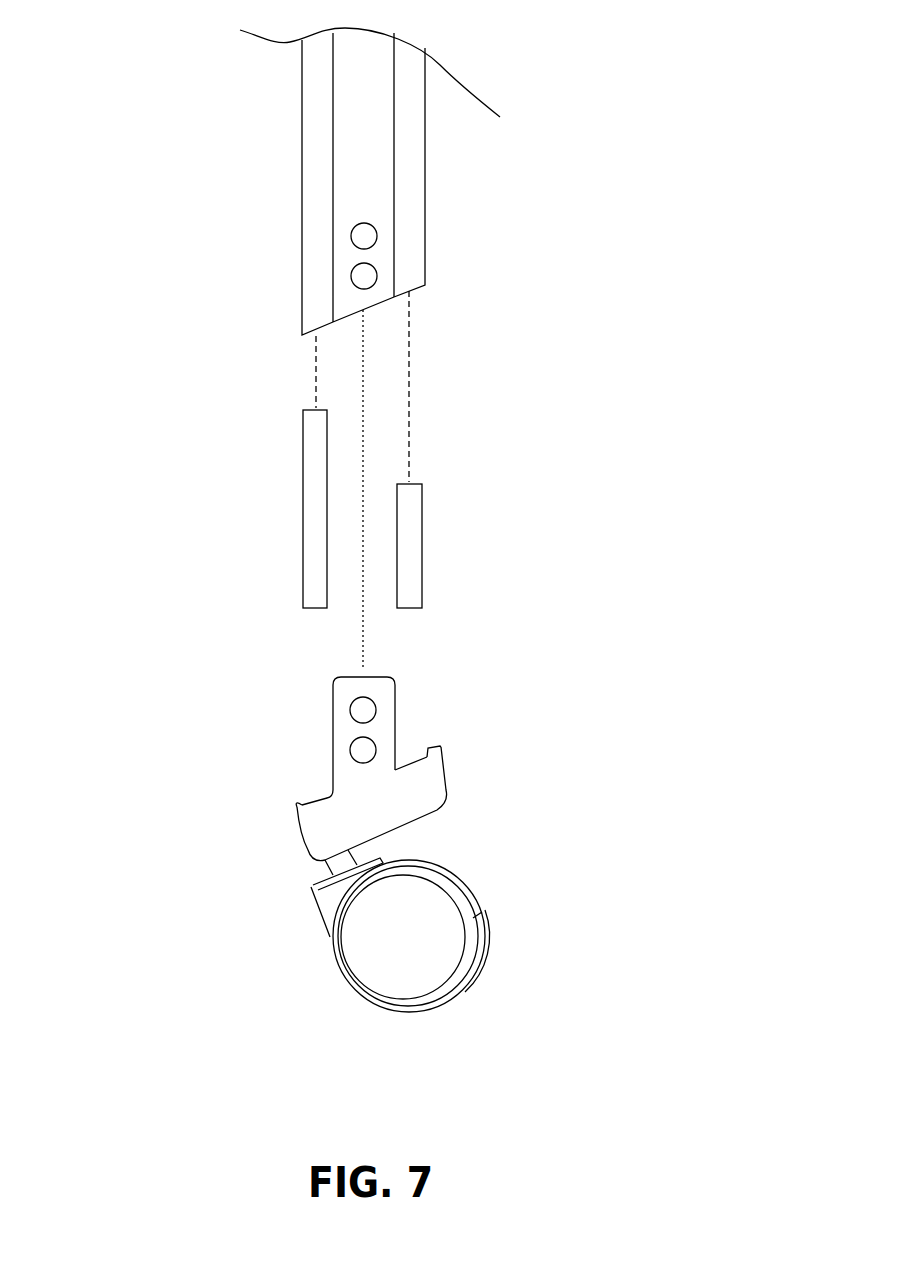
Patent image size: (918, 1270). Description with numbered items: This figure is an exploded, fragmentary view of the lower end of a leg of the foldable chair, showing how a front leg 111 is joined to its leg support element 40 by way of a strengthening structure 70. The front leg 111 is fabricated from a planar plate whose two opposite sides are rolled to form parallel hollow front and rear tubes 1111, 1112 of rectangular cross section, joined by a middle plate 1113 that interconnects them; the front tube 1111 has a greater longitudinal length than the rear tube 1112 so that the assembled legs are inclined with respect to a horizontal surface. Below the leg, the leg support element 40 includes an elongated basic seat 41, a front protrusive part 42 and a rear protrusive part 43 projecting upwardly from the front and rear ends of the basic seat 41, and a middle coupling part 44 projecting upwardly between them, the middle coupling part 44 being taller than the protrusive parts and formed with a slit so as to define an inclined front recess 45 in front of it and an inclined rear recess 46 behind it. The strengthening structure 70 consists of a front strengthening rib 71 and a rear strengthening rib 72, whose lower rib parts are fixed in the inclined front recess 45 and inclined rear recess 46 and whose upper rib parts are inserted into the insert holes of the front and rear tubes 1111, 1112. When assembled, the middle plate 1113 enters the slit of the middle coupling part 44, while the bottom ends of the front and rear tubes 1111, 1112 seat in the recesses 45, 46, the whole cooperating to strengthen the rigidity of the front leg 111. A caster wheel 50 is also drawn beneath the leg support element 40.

The front leg 111 is at (459, 181).
The front tube 1111 is at (315, 183).
The rear tube 1112 is at (410, 158).
The middle plate 1113 is at (358, 103).
The strengthening structure 70 is at (297, 479).
The front strengthening rib 71 is at (310, 539).
The rear strengthening rib 72 is at (412, 538).
The leg support element 40 is at (437, 754).
The basic seat 41 is at (402, 782).
The front protrusive part 42 is at (300, 803).
The rear protrusive part 43 is at (440, 747).
The middle coupling part 44 is at (342, 717).
The inclined front recess 45 is at (317, 797).
The inclined rear recess 46 is at (410, 758).
The caster wheel 50 is at (423, 968).